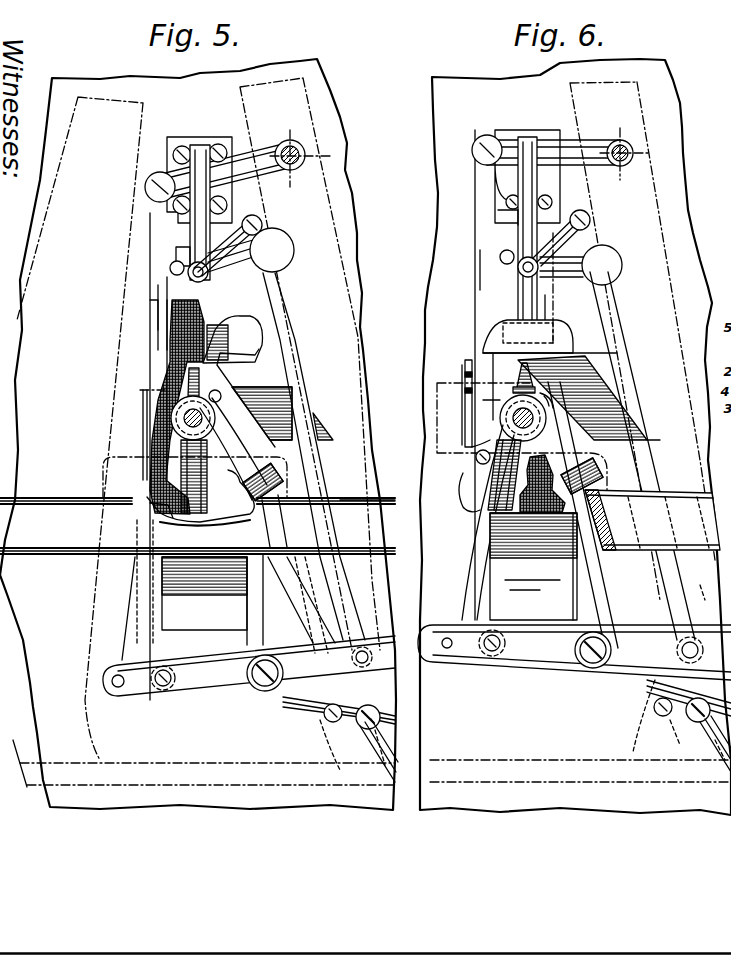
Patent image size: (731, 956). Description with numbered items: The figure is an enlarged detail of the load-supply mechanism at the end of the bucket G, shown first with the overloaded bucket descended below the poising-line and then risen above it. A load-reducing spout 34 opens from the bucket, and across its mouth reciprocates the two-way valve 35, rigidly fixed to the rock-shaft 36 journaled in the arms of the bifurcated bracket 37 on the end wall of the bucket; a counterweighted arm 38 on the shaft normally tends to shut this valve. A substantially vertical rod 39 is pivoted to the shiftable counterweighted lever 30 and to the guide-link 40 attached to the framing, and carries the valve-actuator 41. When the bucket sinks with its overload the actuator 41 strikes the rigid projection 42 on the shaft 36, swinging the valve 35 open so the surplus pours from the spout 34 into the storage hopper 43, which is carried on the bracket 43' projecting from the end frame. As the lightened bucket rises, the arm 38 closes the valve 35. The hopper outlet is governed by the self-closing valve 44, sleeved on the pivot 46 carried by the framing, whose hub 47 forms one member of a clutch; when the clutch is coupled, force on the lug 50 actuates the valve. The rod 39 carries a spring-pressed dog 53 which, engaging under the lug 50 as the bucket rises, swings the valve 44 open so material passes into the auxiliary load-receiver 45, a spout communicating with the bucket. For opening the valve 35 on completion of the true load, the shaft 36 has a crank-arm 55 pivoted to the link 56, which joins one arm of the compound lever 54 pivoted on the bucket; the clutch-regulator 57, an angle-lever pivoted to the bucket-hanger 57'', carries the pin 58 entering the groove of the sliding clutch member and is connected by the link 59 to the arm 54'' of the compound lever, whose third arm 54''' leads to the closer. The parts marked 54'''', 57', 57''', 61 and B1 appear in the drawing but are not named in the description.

In FIG. 5, the counterweighted lever 30 is at (218, 685).
In FIG. 6, the counterweighted lever 30 is at (563, 678).
In FIG. 5, the spout 34 is at (152, 323).
In FIG. 6, the spout 34 is at (545, 310).
In FIG. 5, the valve 35 is at (247, 332).
In FIG. 6, the valve 35 is at (563, 341).
In FIG. 5, the rock-shaft 36 is at (190, 275).
In FIG. 6, the rock-shaft 36 is at (522, 272).
In FIG. 5, the bifurcated bracket 37 is at (167, 215).
In FIG. 6, the bifurcated bracket 37 is at (525, 237).
In FIG. 5, the counterweighted arm 38 is at (277, 243).
In FIG. 6, the counterweighted arm 38 is at (576, 262).
In FIG. 5, the rod 39 is at (158, 297).
In FIG. 6, the rod 39 is at (478, 263).
In FIG. 5, the guide-link 40 is at (244, 160).
In FIG. 6, the guide-link 40 is at (582, 152).
In FIG. 5, the valve-actuator 41 is at (175, 258).
In FIG. 6, the valve-actuator 41 is at (502, 217).
In FIG. 5, the rigid projection 42 is at (170, 268).
In FIG. 6, the rigid projection 42 is at (504, 262).
In FIG. 5, the storage hopper 43 is at (127, 435).
In FIG. 6, the storage hopper 43 is at (467, 403).
In FIG. 5, the bracket 43' is at (145, 381).
In FIG. 6, the bracket 43' is at (484, 368).
In FIG. 5, the valve 44 is at (230, 500).
In FIG. 6, the valve 44 is at (468, 484).
In FIG. 5, the auxiliary load-receiver 45 is at (180, 593).
In FIG. 6, the auxiliary load-receiver 45 is at (547, 607).
In FIG. 5, the pivot 46 is at (175, 440).
In FIG. 6, the pivot 46 is at (513, 428).
In FIG. 5, the hub 47 is at (177, 410).
In FIG. 6, the hub 47 is at (547, 423).
In FIG. 5, the lug 50 is at (173, 427).
In FIG. 6, the lug 50 is at (500, 424).
In FIG. 6, the spring-pressed dog 53 is at (483, 437).
In FIG. 5, the compound lever 54 is at (369, 750).
In FIG. 6, the compound lever 54 is at (700, 746).
In FIG. 5, the arm of compound lever 54'' is at (311, 745).
In FIG. 6, the arm of compound lever 54'' is at (565, 633).
In FIG. 6, the third arm of compound lever 54''' is at (661, 736).
In FIG. 5, the shaft part 54'''' is at (364, 764).
In FIG. 6, the shaft part 54'''' is at (706, 768).
In FIG. 5, the crank-arm 55 is at (215, 250).
In FIG. 6, the crank-arm 55 is at (562, 215).
In FIG. 5, the link 56 is at (290, 345).
In FIG. 6, the link 56 is at (622, 365).
In FIG. 5, the clutch-regulator 57 is at (285, 558).
In FIG. 6, the clutch-regulator 57 is at (532, 522).
In FIG. 5, the lever arm 57' is at (233, 449).
In FIG. 6, the bucket-hanger 57'' is at (562, 384).
In FIG. 5, the lever block 57''' is at (366, 485).
In FIG. 6, the lever block 57''' is at (652, 509).
In FIG. 5, the pin 58 is at (220, 394).
In FIG. 6, the pin 58 is at (487, 404).
In FIG. 5, the link 59 is at (293, 613).
In FIG. 6, the link 59 is at (612, 581).
In FIG. 5, the wedge 61 is at (272, 403).
In FIG. 6, the wedge 61 is at (610, 402).
In FIG. 5, the bar B1 is at (298, 697).
In FIG. 6, the bar B1 is at (646, 692).
In FIG. 5, the bucket G is at (40, 584).
In FIG. 6, the bucket G is at (513, 735).